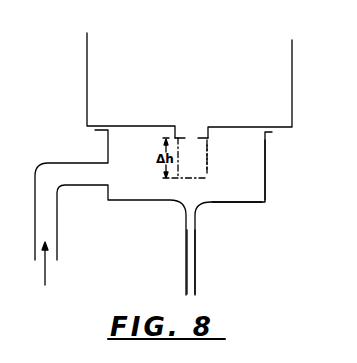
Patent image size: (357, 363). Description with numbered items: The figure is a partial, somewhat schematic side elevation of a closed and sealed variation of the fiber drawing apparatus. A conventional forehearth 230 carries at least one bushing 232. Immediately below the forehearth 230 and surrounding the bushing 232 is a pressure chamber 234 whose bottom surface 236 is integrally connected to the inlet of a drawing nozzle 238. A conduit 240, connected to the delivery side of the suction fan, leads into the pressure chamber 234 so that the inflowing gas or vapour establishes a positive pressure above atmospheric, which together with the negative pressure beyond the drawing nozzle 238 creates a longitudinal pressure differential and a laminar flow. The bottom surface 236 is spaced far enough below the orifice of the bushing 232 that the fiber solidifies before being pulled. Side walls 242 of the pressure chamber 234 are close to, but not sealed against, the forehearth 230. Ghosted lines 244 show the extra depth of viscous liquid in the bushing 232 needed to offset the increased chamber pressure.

The forehearth 230 is at (211, 86).
The bushing 232 is at (191, 134).
The pressure chamber 234 is at (269, 185).
The bottom surface 236 is at (239, 201).
The drawing nozzle 238 is at (197, 248).
The conduit 240 is at (51, 229).
The side walls 242 is at (108, 152).
The ghosted lines 244 is at (207, 147).